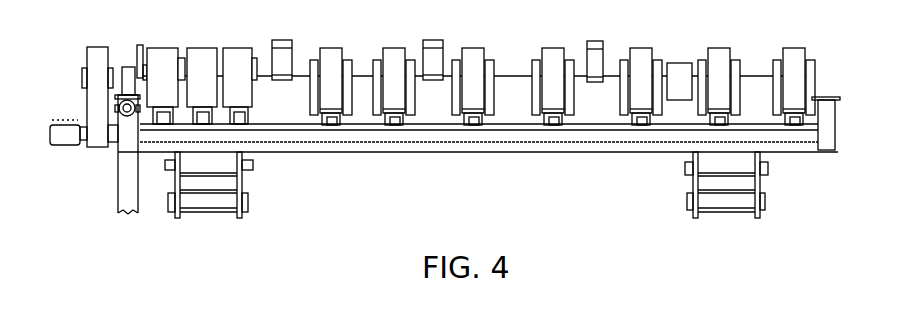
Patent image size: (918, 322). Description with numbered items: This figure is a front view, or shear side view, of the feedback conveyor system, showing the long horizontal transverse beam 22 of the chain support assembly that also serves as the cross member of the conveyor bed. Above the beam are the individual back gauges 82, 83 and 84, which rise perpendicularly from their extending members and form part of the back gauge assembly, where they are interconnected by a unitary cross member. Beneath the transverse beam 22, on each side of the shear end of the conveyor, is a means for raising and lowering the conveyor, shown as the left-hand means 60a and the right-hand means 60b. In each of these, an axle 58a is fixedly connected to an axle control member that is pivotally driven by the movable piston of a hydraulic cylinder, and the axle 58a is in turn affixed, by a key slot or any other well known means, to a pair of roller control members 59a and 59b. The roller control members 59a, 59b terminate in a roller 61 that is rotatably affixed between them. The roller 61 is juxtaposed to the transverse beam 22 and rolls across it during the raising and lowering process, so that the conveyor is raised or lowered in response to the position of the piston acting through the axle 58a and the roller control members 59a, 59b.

The transverse beam 22 is at (747, 133).
The axle 58a is at (720, 200).
The roller control member 59a is at (760, 180).
The roller control member 59b is at (693, 182).
The means for raising and lowering the conveyor 60a is at (258, 185).
The means for raising and lowering the conveyor 60b is at (723, 204).
The roller 61 is at (708, 163).
The back gauge 82 is at (290, 40).
The back gauge 83 is at (435, 40).
The back gauge 84 is at (600, 41).